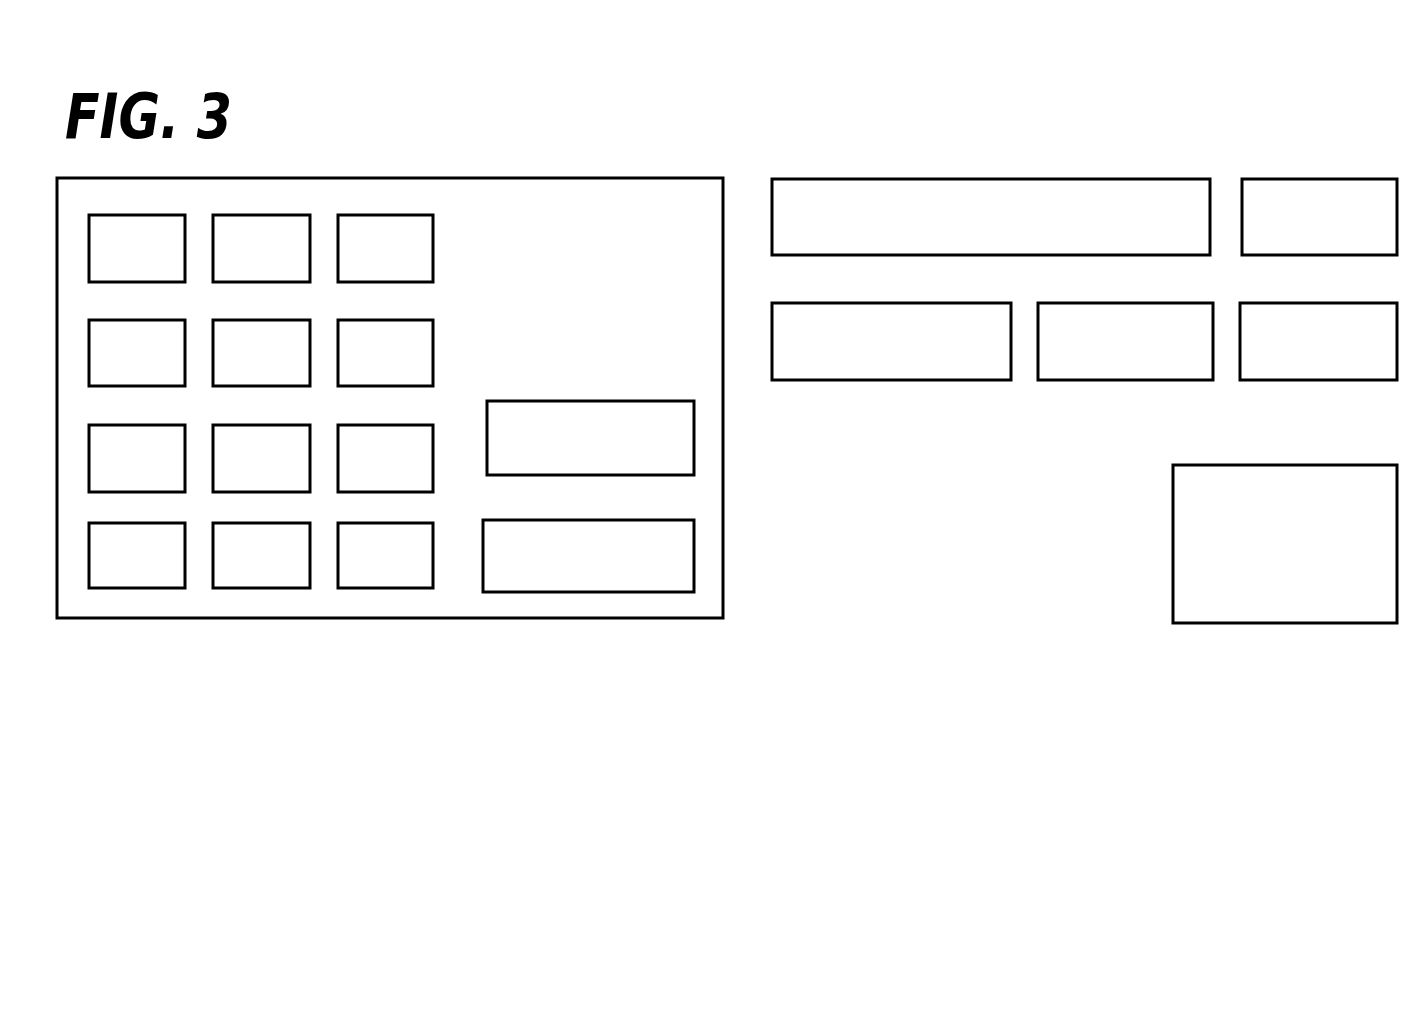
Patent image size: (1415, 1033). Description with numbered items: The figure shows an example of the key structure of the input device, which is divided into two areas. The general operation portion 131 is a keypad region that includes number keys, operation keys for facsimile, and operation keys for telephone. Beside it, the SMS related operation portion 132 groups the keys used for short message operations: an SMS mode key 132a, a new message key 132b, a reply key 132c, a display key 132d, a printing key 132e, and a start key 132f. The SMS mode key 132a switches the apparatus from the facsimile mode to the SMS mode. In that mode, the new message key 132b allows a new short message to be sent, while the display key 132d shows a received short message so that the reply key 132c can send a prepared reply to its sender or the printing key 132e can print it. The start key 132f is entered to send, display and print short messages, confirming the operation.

The general operation portion 131 is at (580, 606).
The SMS related operation portion 132 is at (1084, 454).
The SMS mode key 132a is at (1085, 195).
The new message key 132b is at (857, 368).
The reply key 132c is at (1063, 365).
The display key 132d is at (1302, 195).
The printing key 132e is at (1287, 365).
The start key 132f is at (1187, 587).